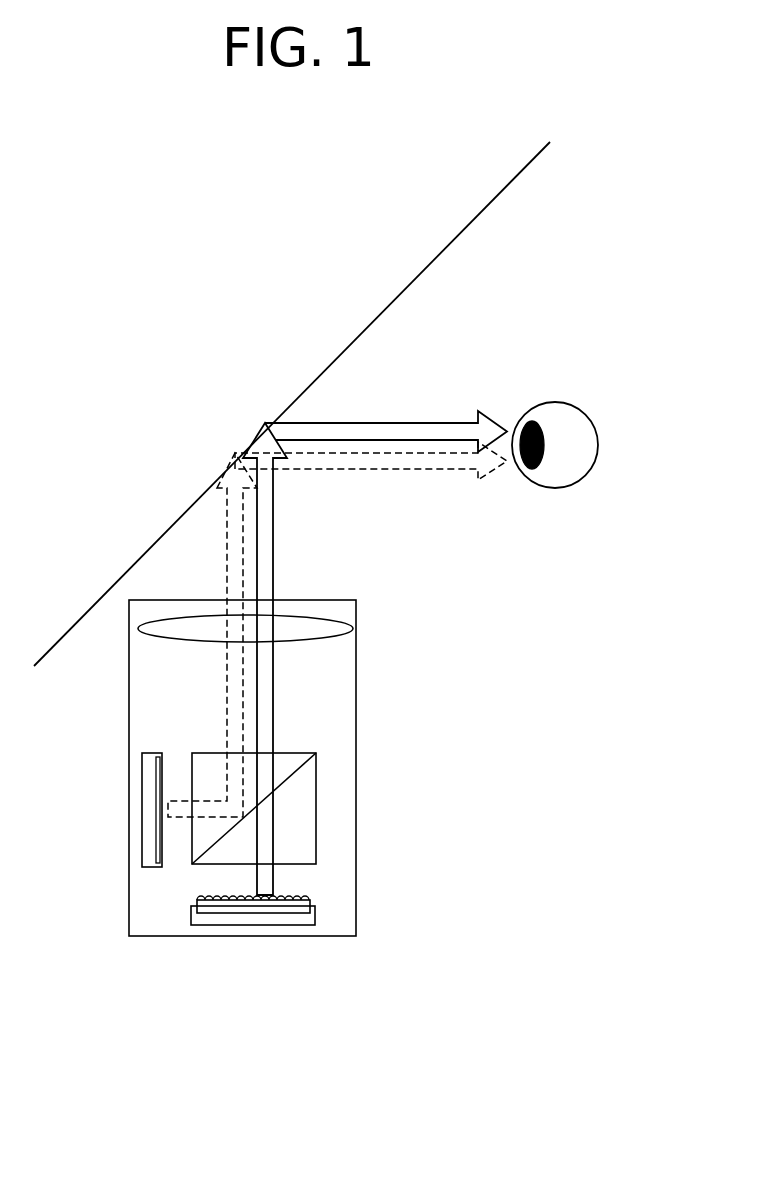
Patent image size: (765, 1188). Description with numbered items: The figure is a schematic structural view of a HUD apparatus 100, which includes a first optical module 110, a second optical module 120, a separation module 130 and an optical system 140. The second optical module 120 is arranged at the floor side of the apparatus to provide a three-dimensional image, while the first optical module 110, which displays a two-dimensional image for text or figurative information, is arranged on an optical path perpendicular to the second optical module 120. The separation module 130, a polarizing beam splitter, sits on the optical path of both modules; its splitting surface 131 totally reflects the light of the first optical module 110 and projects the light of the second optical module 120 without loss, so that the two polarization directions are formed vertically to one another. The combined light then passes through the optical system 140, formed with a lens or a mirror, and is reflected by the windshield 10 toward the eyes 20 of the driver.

The windshield 10 is at (402, 292).
The eyes of a driver 20 is at (583, 407).
The HUD apparatus 100 is at (357, 697).
The first optical module 110 is at (142, 818).
The second optical module 120 is at (258, 926).
The separation module 130 is at (316, 828).
The splitting surface of beam splitter 131 is at (316, 753).
The optical system 140 is at (322, 628).